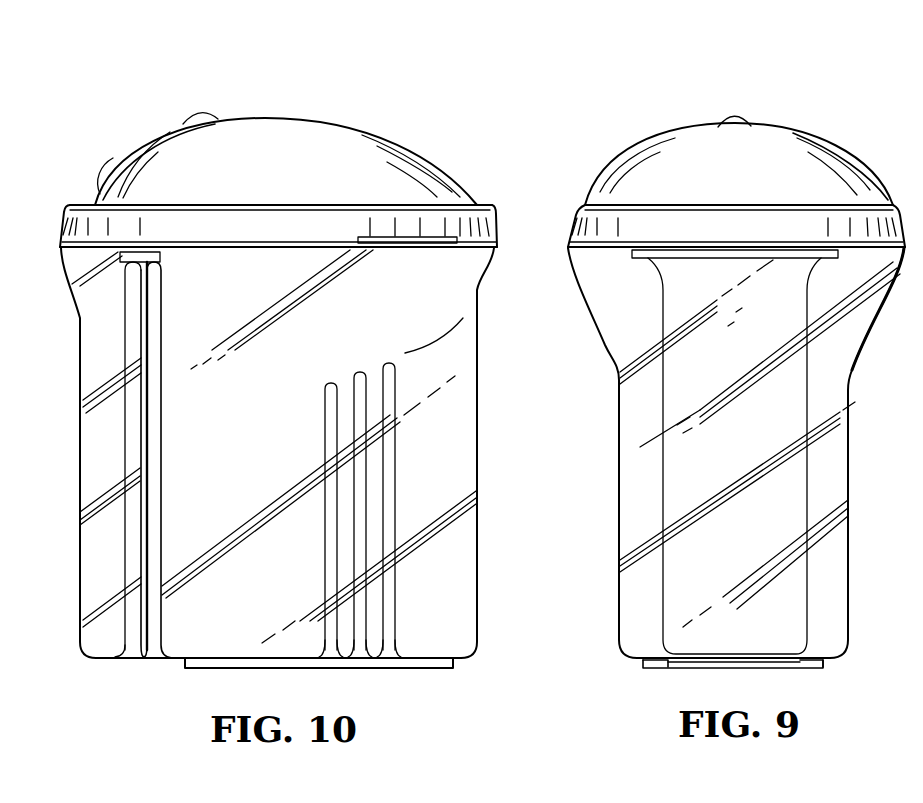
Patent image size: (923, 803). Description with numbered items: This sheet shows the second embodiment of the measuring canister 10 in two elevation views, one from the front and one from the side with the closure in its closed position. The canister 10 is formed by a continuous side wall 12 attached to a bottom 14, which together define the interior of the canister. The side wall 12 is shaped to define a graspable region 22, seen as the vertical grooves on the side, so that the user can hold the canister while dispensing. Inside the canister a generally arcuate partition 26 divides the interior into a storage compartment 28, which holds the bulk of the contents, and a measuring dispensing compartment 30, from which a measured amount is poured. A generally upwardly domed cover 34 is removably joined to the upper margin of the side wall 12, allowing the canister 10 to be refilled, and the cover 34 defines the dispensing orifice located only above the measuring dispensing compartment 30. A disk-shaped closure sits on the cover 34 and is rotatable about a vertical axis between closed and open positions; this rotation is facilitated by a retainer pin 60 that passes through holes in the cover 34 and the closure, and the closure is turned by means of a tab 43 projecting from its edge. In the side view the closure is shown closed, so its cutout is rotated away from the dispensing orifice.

In FIG. 10, the measuring canister 10 is at (163, 96).
In FIG. 9, the measuring canister 10 is at (578, 151).
In FIG. 10, the continuous side wall 12 is at (475, 466).
In FIG. 9, the continuous side wall 12 is at (619, 372).
In FIG. 10, the bottom 14 is at (183, 667).
In FIG. 9, the bottom 14 is at (833, 667).
In FIG. 10, the graspable region 22 is at (358, 510).
In FIG. 10, the partition 26 is at (167, 520).
In FIG. 9, the partition 26 is at (805, 392).
In FIG. 10, the storage compartment 28 is at (257, 450).
In FIG. 10, the measuring dispensing compartment 30 is at (115, 449).
In FIG. 10, the cover 34 is at (285, 122).
In FIG. 9, the cover 34 is at (808, 133).
In FIG. 10, the tab 43 is at (106, 172).
In FIG. 10, the retainer pin 60 is at (200, 117).
In FIG. 9, the retainer pin 60 is at (735, 113).